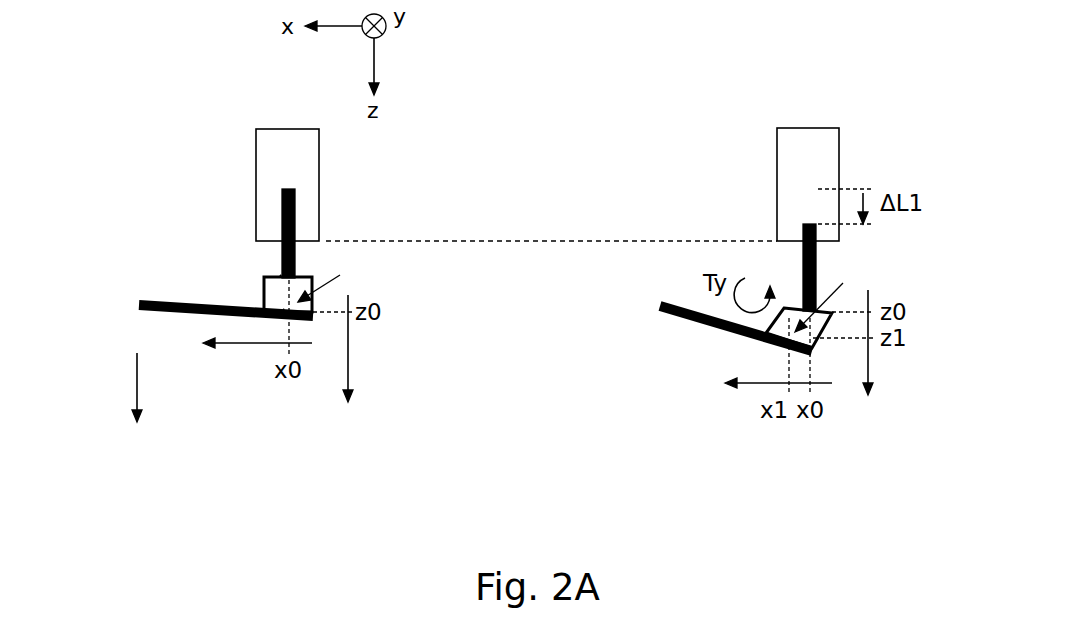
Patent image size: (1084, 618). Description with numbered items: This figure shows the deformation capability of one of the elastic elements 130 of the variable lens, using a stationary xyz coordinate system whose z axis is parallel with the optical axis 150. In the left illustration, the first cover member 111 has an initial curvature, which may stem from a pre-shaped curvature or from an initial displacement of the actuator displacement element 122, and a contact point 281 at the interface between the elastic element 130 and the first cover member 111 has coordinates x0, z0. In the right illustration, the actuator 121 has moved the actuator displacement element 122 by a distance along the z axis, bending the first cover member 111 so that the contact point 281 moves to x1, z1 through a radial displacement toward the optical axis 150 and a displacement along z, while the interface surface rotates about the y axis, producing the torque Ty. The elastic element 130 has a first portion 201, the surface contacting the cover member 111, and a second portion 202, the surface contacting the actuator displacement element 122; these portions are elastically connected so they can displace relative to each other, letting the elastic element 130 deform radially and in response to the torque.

The first cover member 111 is at (177, 300).
The actuator 121 is at (323, 192).
The actuator displacement element 122 is at (298, 220).
The elastic element 130 is at (265, 288).
The optical axis 150 is at (115, 387).
The first portion 201 is at (283, 309).
The second portion 202 is at (280, 275).
The contact point 281 is at (593, 295).